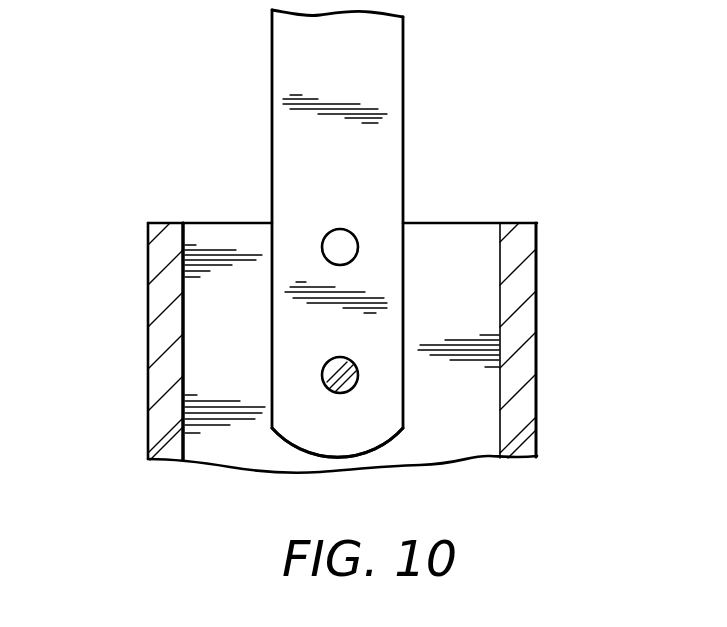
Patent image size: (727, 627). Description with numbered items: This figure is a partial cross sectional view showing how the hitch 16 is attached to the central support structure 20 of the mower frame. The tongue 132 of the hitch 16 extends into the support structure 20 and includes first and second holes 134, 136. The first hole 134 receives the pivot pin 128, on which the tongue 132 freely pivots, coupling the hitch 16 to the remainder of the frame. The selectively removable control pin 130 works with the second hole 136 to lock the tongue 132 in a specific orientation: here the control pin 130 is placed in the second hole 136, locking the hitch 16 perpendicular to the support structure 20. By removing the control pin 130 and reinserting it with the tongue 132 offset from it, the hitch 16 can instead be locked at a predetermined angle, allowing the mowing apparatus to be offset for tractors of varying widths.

The hitch 16 is at (403, 135).
The central support structure 20 is at (536, 330).
The pivot pin 128 is at (329, 240).
The control pin 130 is at (328, 390).
The tongue 132 is at (272, 320).
The first hole 134 is at (358, 243).
The second hole 136 is at (352, 390).